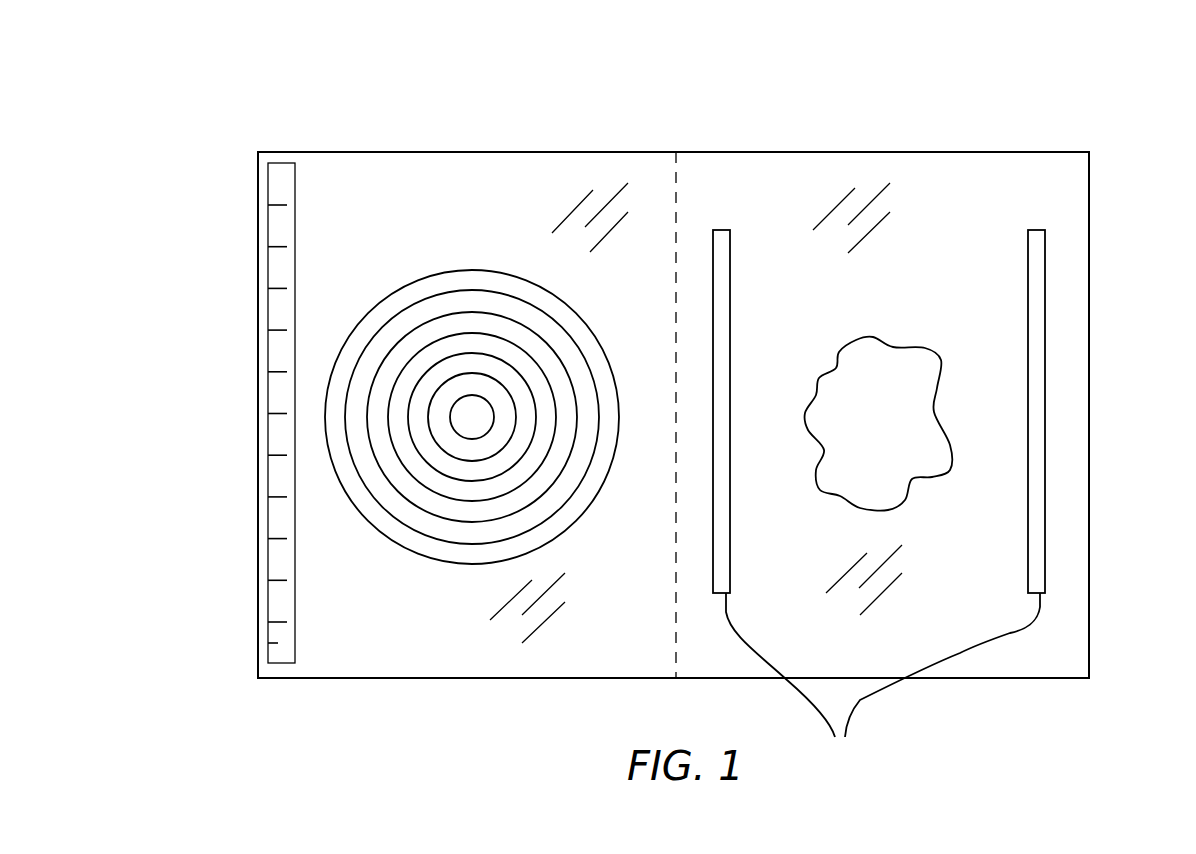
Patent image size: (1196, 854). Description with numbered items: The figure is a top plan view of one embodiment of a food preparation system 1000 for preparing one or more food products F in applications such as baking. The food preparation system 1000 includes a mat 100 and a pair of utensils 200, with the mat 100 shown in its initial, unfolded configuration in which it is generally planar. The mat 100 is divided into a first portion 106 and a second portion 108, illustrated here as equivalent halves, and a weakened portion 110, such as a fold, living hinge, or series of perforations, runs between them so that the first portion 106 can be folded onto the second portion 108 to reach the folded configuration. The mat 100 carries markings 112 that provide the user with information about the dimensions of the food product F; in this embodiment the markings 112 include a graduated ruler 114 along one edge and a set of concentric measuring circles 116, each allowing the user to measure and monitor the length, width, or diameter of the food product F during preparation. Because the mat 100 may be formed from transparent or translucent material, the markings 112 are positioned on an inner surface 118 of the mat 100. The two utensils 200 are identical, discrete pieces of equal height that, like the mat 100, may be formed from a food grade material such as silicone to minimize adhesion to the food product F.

The food preparation system 1000 is at (702, 124).
The mat 100 is at (1050, 168).
The first portion 106 is at (338, 172).
The second portion 108 is at (1073, 281).
The weakened portion 110 is at (676, 598).
The markings 112 is at (441, 585).
The graduated ruler 114 is at (268, 466).
The measuring circles 116 is at (448, 291).
The inner surface 118 is at (312, 547).
The utensils 200 is at (879, 496).
The food product F is at (873, 345).